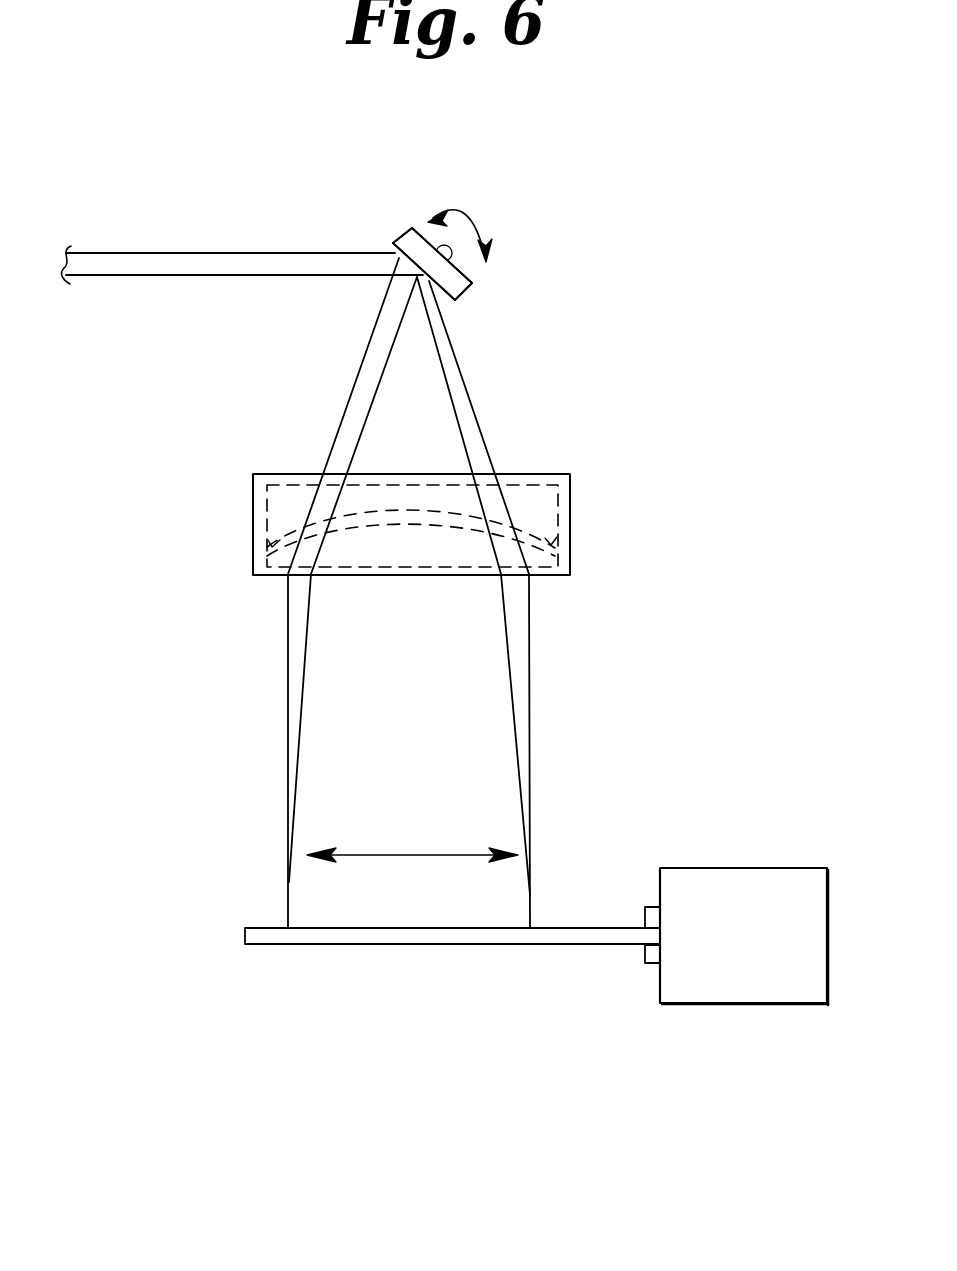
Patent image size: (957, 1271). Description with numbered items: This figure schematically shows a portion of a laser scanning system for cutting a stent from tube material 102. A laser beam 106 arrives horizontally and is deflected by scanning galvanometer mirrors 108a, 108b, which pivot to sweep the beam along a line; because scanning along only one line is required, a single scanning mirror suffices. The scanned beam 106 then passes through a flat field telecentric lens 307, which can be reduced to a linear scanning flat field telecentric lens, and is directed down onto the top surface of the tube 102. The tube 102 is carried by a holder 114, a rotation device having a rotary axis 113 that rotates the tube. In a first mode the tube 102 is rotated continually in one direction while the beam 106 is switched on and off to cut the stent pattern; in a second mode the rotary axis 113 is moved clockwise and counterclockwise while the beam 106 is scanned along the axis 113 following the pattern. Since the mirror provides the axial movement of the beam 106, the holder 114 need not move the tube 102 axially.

The tube material 102 is at (455, 944).
The laser beam 106 is at (250, 276).
The scanning galvanometer mirror 108a is at (413, 229).
The scanning galvanometer mirror 108b is at (515, 200).
The rotary axis 113 is at (646, 915).
The holder 114 is at (658, 965).
The flat field telecentric lens 307 is at (570, 555).